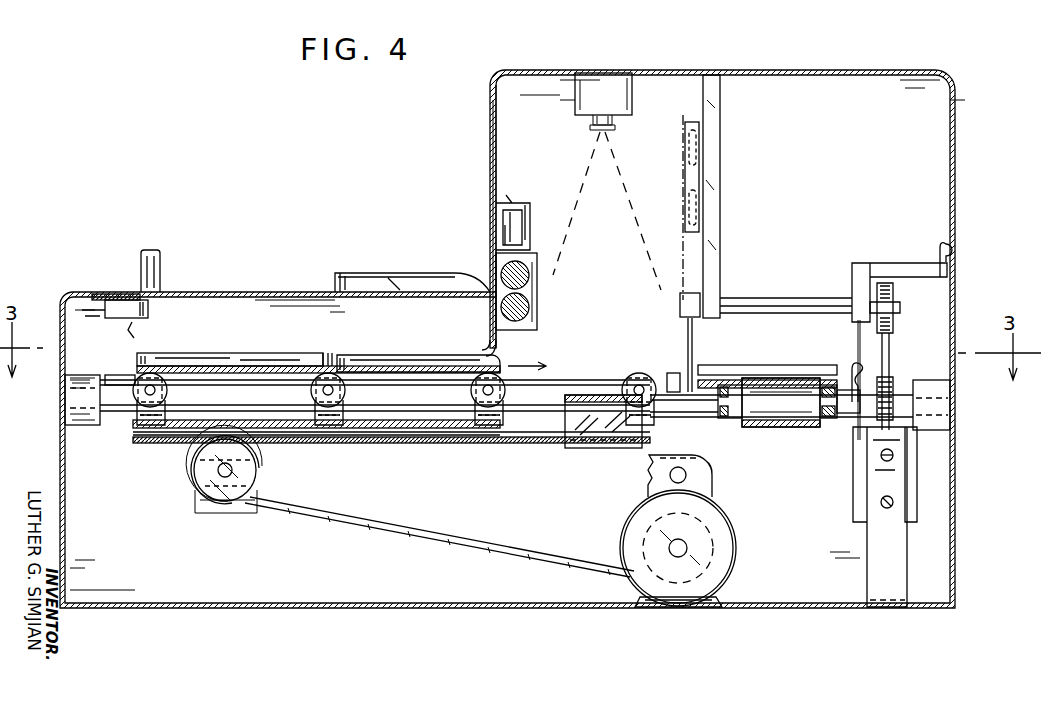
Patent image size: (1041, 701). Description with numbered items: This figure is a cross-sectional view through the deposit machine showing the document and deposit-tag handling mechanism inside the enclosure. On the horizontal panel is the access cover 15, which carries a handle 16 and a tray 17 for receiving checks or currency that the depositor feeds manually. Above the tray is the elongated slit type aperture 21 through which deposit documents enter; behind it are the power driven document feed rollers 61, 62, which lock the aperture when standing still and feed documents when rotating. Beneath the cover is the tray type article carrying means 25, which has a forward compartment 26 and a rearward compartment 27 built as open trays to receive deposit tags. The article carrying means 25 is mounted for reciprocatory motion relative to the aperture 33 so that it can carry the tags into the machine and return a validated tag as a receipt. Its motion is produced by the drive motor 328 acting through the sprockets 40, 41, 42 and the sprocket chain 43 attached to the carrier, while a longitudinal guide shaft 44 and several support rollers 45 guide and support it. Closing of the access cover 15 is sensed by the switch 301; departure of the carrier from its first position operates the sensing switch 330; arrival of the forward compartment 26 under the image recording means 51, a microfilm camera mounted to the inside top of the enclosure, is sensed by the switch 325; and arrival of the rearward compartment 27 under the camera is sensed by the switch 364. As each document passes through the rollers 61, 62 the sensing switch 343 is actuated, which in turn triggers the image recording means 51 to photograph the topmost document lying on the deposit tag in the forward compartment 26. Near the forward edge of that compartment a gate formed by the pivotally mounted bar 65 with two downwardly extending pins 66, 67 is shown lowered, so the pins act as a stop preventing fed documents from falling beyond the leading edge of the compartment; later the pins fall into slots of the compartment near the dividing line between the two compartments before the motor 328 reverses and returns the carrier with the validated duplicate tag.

The access cover 15 is at (242, 292).
The handle 16 is at (160, 256).
The tray 17 is at (368, 273).
The aperture 21 is at (487, 275).
The article carrying means 25 is at (330, 343).
The forward compartment 26 is at (410, 356).
The rearward compartment 27 is at (228, 364).
The aperture 33 is at (484, 350).
The sprocket 40 is at (698, 542).
The sprocket 41 is at (650, 470).
The sprocket 42 is at (245, 489).
The sprocket chain 43 is at (462, 545).
The longitudinal guide shaft 44 is at (125, 412).
The support rollers 45 is at (347, 389).
The image recording means 51 is at (607, 181).
The document feed roller 61 is at (537, 318).
The document feed roller 62 is at (532, 281).
The pivotally mounted bar 65 is at (694, 263).
The pin 66 is at (694, 141).
The pin 67 is at (694, 198).
The switch 301 is at (150, 313).
The switch 325 is at (673, 372).
The drive motor 328 is at (733, 566).
The sensing switch 330 is at (122, 375).
The sensing switch 343 is at (518, 205).
The switch 364 is at (855, 402).